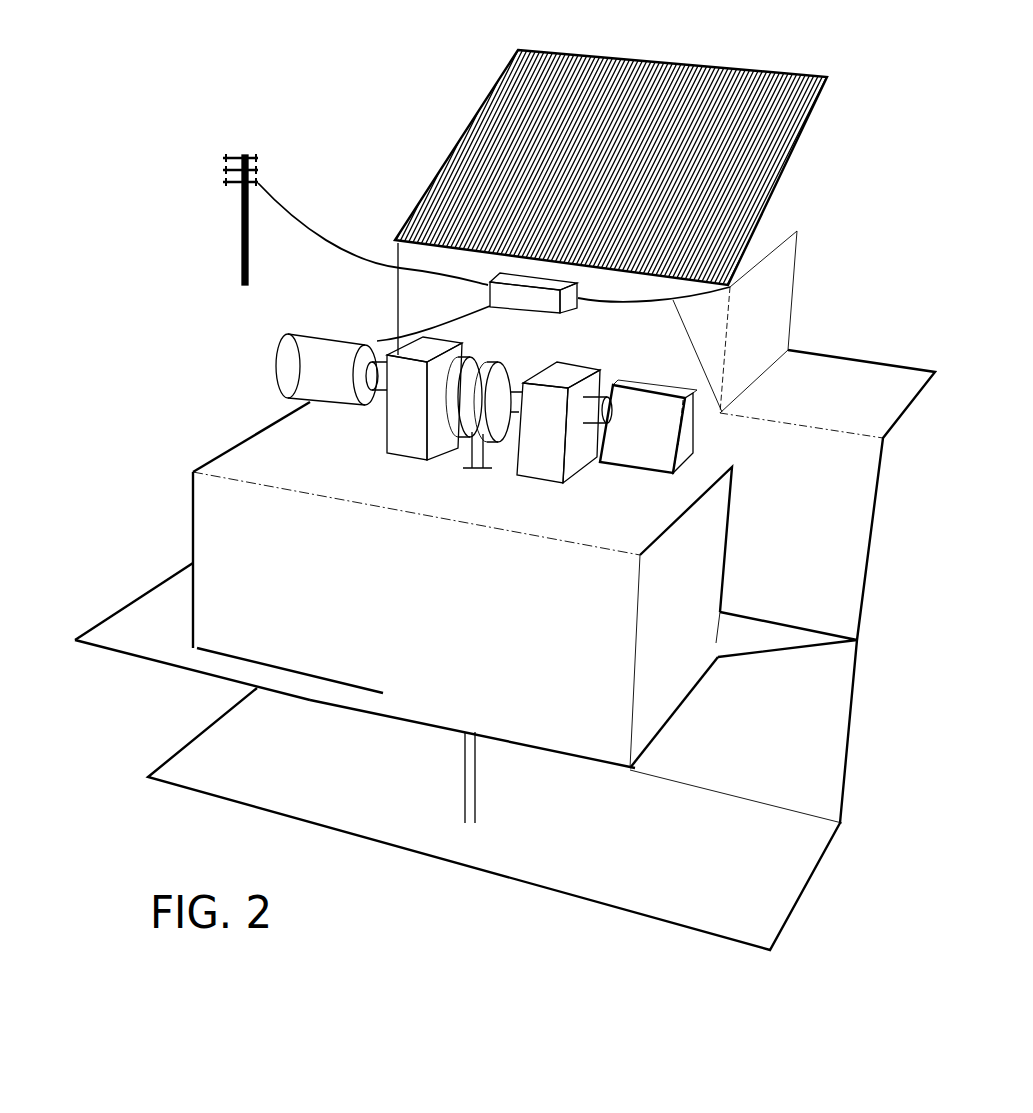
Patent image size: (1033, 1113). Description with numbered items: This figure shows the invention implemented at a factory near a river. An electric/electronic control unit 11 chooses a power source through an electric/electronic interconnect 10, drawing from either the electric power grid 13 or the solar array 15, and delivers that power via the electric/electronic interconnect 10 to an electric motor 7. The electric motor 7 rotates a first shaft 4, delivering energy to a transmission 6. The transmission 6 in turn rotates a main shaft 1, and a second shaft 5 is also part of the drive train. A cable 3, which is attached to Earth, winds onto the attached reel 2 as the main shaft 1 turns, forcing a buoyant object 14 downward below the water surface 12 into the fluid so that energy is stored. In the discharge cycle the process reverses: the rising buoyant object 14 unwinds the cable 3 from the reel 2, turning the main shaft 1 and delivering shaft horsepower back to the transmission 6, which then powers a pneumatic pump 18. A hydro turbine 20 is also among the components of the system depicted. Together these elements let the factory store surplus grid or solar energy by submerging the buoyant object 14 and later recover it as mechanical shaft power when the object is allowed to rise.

The main shaft 1 is at (504, 430).
The reel 2 is at (463, 372).
The cable 3 is at (471, 455).
The first shaft 4 is at (368, 388).
The second shaft 5 is at (591, 406).
The transmission 6 is at (404, 398).
The electric motor 7 is at (276, 358).
The electric/electronic interconnect 10 is at (324, 232).
The electric/electronic control unit 11 is at (502, 290).
The water surface 12 is at (166, 630).
The electric power grid 13 is at (224, 192).
The buoyant object 14 is at (516, 632).
The solar array 15 is at (468, 120).
The pneumatic pump 18 is at (681, 448).
The hydro turbine 20 is at (796, 494).